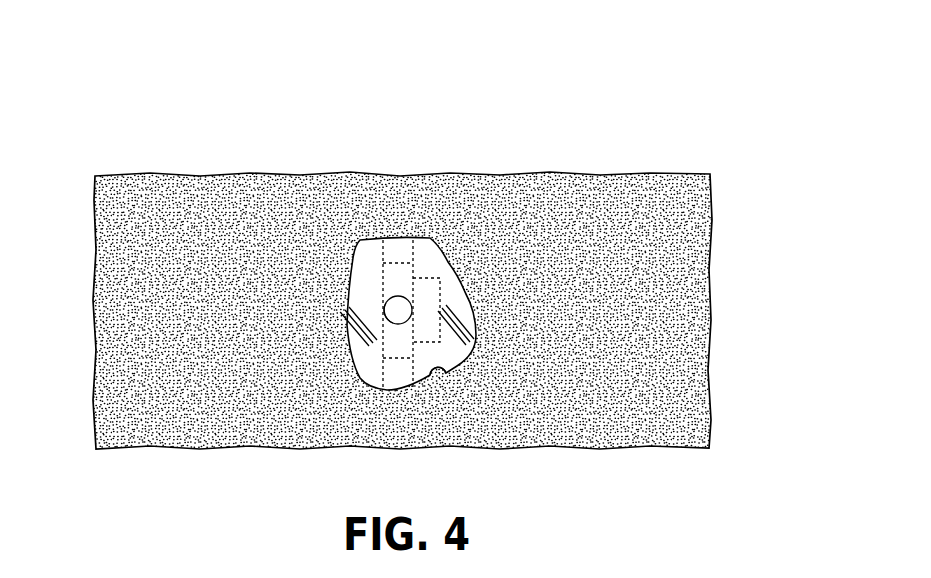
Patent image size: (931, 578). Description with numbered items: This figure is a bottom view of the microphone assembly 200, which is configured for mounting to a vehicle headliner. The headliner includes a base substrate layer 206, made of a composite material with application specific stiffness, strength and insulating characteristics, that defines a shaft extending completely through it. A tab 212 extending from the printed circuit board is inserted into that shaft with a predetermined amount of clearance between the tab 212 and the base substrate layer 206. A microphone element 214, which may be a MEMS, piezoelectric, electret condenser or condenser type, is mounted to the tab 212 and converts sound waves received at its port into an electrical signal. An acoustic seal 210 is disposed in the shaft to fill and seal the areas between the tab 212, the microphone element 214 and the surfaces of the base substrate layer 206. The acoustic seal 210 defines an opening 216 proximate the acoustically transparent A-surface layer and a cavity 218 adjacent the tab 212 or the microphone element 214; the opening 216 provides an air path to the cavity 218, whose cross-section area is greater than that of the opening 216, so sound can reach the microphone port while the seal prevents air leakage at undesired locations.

The microphone assembly 200 is at (496, 102).
The base substrate layer 206 is at (705, 318).
The acoustic seal 210 is at (362, 357).
The tab 212 is at (423, 268).
The microphone element 214 is at (447, 295).
The opening 216 is at (384, 302).
The cavity 218 is at (446, 378).